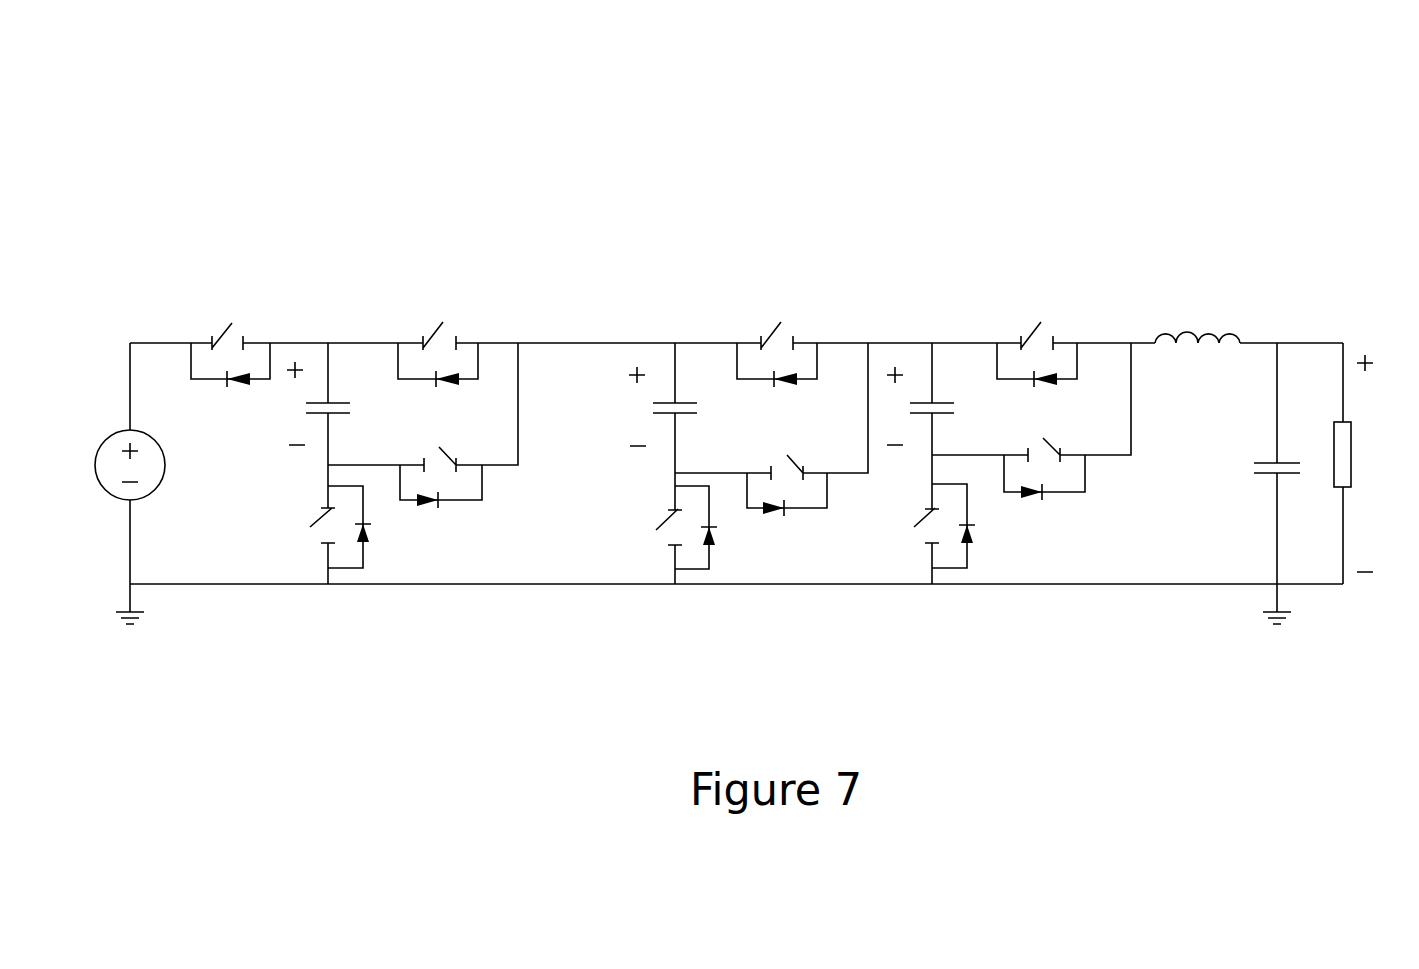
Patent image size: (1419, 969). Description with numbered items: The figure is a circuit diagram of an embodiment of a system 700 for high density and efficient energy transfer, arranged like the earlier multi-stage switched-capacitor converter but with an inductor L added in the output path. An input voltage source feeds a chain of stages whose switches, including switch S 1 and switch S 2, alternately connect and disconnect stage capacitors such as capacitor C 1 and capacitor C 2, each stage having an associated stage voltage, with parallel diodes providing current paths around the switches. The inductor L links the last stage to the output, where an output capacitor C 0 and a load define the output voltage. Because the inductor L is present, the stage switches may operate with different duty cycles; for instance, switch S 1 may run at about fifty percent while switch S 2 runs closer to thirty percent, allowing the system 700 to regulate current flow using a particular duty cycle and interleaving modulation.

The system 700 is at (1022, 176).
The switch S1 of first stage 1 is at (1037, 333).
The switch S2 of second stage 2 is at (777, 333).
The output capacitor C0 0 is at (1255, 483).